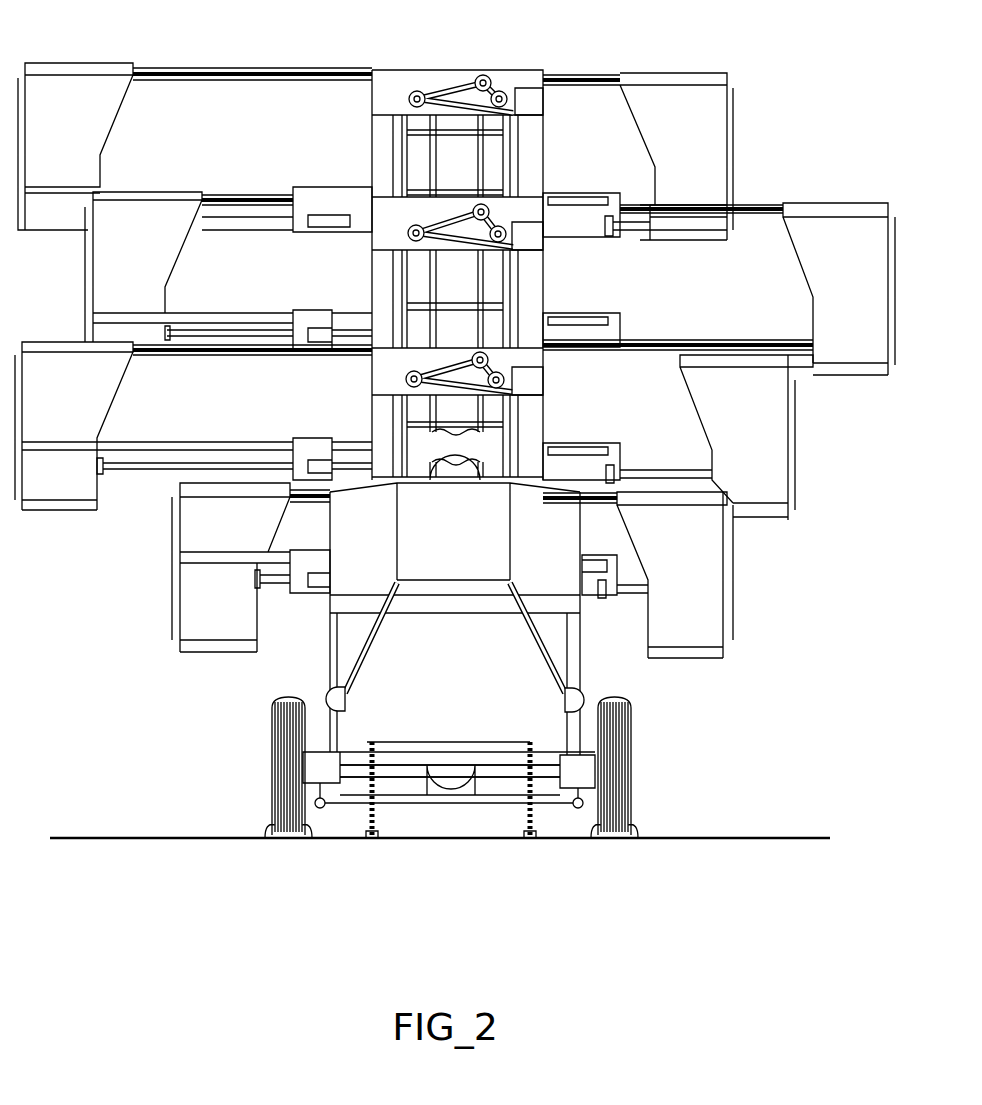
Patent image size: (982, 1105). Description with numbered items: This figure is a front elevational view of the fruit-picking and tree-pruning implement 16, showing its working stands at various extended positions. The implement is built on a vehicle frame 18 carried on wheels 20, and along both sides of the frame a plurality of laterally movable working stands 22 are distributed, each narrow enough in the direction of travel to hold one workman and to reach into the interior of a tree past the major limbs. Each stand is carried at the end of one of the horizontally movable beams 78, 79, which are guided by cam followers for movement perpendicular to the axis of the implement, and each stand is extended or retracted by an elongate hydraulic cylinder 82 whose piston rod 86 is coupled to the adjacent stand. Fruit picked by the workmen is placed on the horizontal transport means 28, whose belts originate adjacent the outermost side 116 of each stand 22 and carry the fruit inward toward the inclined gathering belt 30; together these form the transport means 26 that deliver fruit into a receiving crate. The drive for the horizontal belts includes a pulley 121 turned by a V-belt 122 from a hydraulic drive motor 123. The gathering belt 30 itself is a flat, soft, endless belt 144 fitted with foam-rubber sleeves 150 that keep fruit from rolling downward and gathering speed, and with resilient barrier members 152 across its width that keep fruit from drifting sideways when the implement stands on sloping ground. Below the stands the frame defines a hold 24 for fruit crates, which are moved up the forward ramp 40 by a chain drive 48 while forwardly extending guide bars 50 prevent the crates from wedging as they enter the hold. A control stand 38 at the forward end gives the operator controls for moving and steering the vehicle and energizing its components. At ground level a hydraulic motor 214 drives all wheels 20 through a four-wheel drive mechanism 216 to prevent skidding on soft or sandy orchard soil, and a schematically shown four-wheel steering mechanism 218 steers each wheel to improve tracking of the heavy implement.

The fruit-picking and tree-pruning implement 16 is at (176, 721).
The vehicle frame 18 is at (584, 681).
The wheels 20 is at (272, 793).
The working stands 22 is at (97, 135).
The hold 24 is at (522, 669).
The transport means 26 is at (213, 66).
The horizontal transport means 28 is at (275, 72).
The first gathering belt 30 is at (415, 175).
The control stand 38 is at (452, 570).
The forward ramp 40 is at (525, 822).
The chain drive 48 is at (382, 763).
The guide bars 50 is at (346, 700).
The movable beam 78 is at (223, 311).
The movable beam 79 is at (641, 207).
The hydraulic cylinder 82 is at (556, 225).
The piston rod 86 is at (243, 226).
The outermost side 116 is at (90, 272).
The pulley 121 is at (501, 90).
The V-belt 122 is at (457, 80).
The hydraulic drive motor 123 is at (535, 105).
The flat belt 144 is at (470, 280).
The resilient sleeves 150 is at (420, 418).
The barrier members 152 is at (455, 437).
The hydraulic motor 214 is at (470, 822).
The four-wheel drive mechanism 216 is at (450, 807).
The four-wheel steering mechanism 218 is at (541, 809).